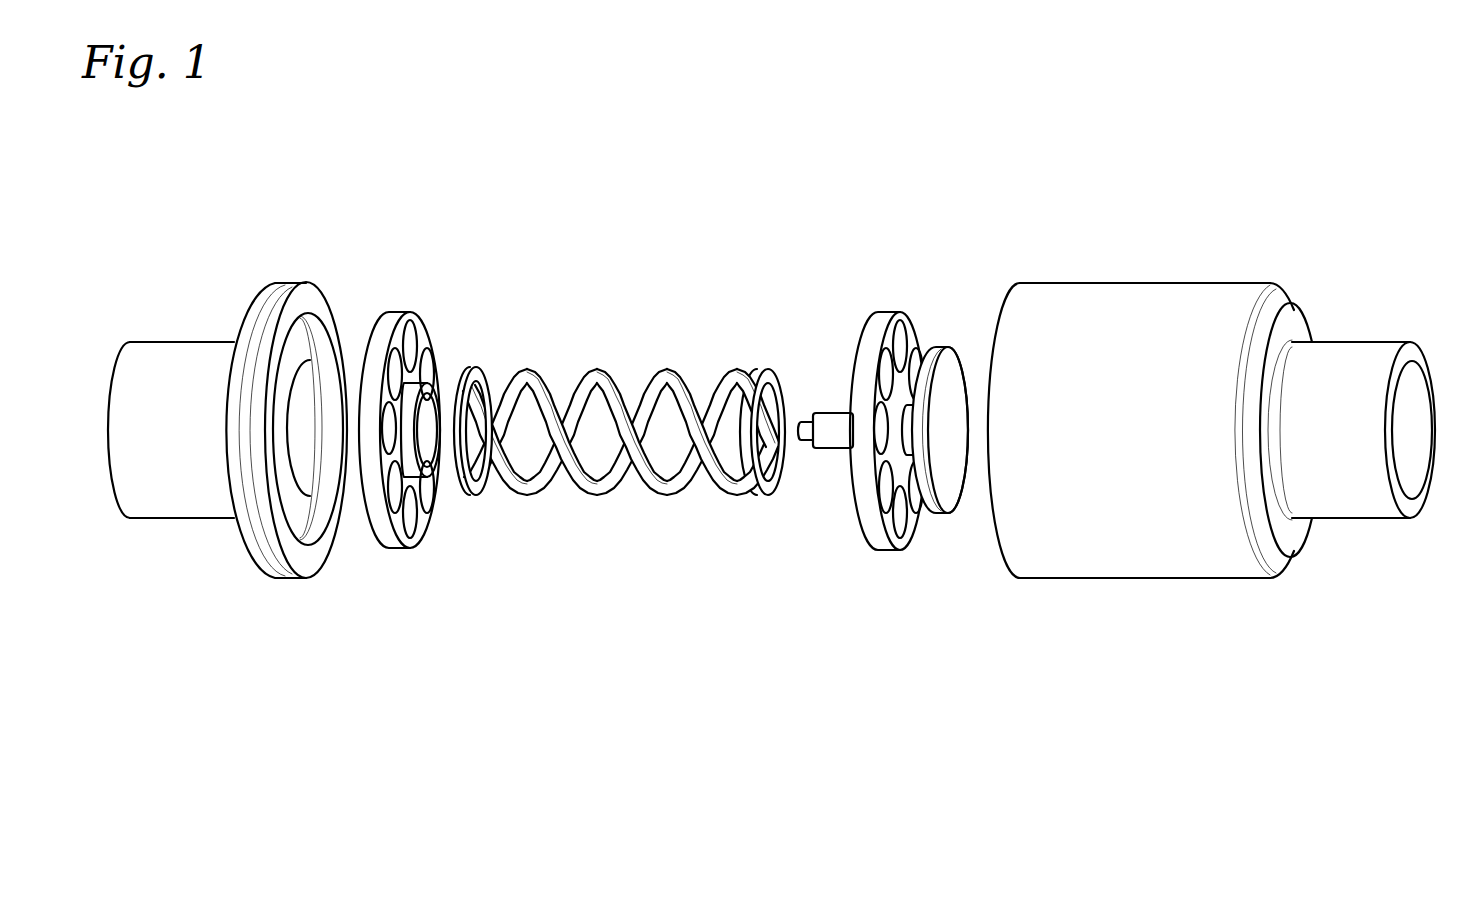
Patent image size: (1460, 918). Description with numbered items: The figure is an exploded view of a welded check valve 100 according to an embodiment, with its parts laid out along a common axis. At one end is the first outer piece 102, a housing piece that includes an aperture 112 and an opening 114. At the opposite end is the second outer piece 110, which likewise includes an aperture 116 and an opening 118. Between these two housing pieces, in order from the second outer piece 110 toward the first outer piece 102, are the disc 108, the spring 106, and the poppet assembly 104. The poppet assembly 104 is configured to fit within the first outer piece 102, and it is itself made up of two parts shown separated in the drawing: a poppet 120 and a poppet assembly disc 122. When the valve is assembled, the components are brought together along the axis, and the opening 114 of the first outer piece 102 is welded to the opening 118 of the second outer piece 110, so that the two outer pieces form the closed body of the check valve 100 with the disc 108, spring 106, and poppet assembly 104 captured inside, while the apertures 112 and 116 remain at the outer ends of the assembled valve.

The welded check valve 100 is at (470, 165).
The first outer piece 102 is at (1122, 283).
The poppet assembly 104 is at (888, 286).
The spring 106 is at (528, 367).
The disc 108 is at (401, 313).
The second outer piece 110 is at (217, 340).
The aperture 112 is at (1410, 397).
The opening 114 is at (1037, 542).
The aperture 116 is at (135, 387).
The opening 118 is at (323, 508).
The poppet 120 is at (943, 513).
The poppet assembly disc 122 is at (888, 556).